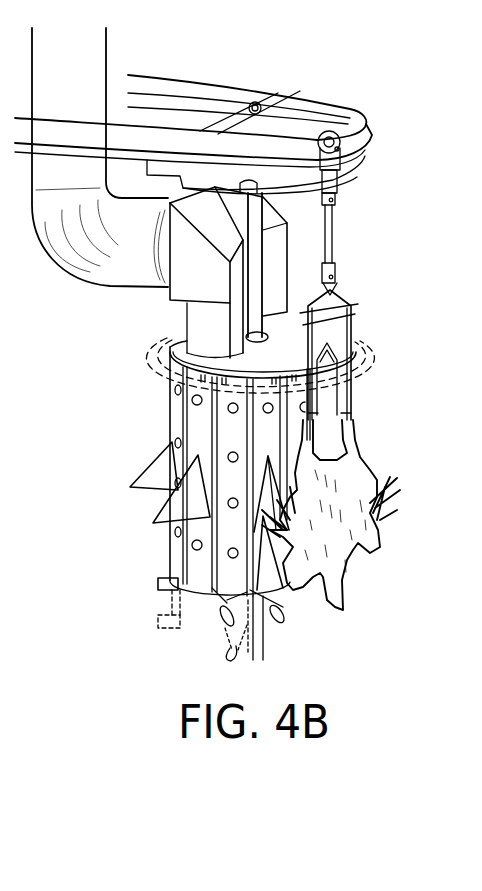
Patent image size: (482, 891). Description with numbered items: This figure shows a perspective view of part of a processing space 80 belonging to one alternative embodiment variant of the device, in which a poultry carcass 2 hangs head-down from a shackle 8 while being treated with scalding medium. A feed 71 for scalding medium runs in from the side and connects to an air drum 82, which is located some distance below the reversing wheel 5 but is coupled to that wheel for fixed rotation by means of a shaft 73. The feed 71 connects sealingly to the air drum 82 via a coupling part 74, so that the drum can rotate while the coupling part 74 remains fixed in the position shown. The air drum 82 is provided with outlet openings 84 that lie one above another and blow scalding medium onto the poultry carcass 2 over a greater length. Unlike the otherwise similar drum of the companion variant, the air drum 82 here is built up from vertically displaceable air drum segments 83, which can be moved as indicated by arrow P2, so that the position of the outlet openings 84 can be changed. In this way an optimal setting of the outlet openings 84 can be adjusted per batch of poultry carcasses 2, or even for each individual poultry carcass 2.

The poultry carcass 2 is at (348, 588).
The reversing wheel 5 is at (363, 157).
The shackle gripper 8 is at (358, 304).
The feed for scalding medium 71 is at (87, 53).
The shaft 73 is at (257, 258).
The coupling part 74 is at (202, 313).
The processing space 80 is at (110, 459).
The air drum 82 is at (190, 556).
The air drum segments 83 is at (220, 592).
The outlet openings 84 is at (228, 457).
The arrow P2 is at (135, 594).